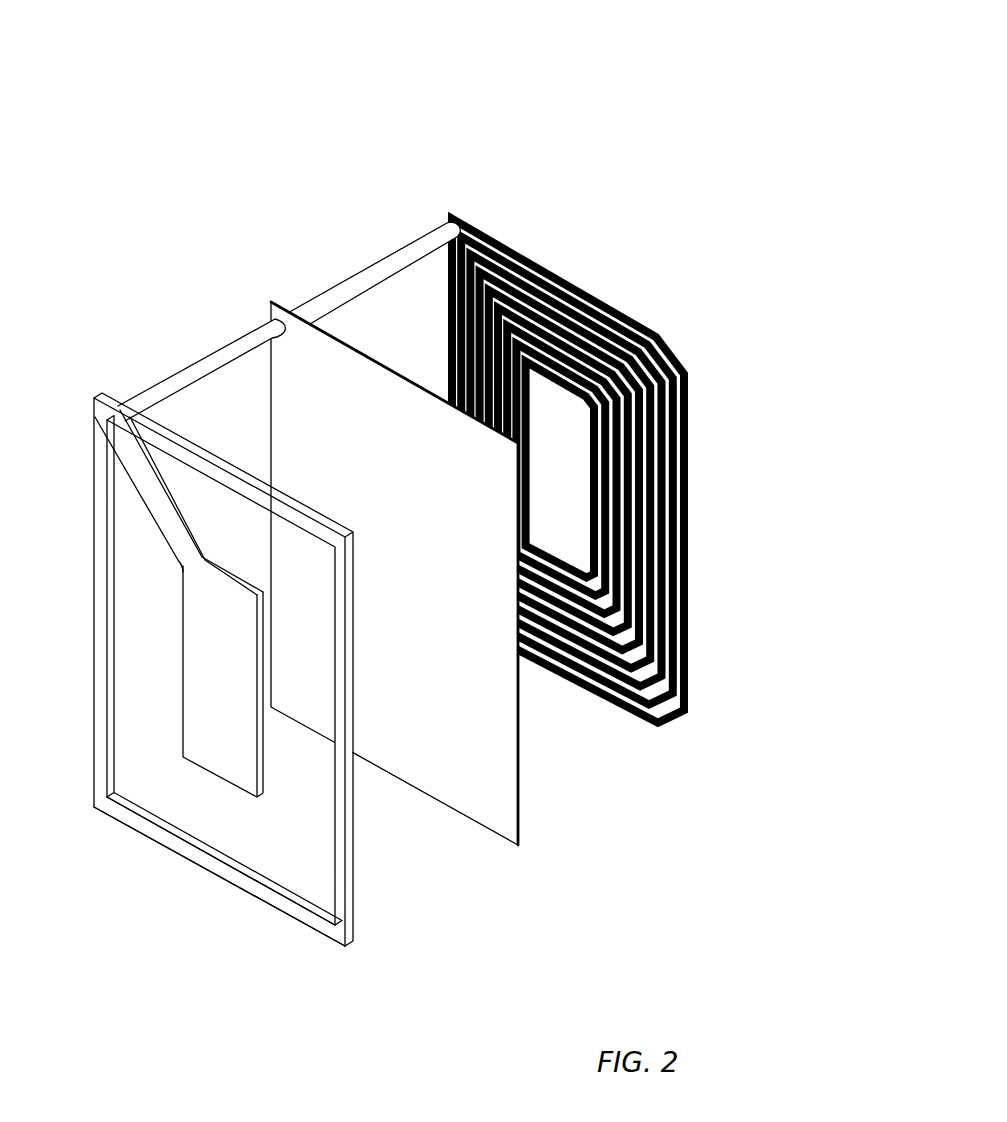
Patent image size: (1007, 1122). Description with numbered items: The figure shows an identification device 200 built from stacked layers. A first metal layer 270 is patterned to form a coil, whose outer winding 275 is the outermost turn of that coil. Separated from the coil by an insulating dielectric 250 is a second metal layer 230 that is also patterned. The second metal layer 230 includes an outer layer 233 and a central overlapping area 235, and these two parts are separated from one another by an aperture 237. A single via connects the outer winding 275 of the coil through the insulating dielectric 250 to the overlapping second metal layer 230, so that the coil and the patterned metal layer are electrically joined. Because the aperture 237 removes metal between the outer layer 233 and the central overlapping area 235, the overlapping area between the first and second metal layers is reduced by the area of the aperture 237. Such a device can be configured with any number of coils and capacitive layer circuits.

The identification device 200 is at (240, 152).
The second metal layer 230 is at (238, 758).
The outer layer 233 is at (173, 858).
The central overlapping area 235 is at (183, 668).
The aperture 237 is at (309, 885).
The insulating dielectric 250 is at (423, 648).
The first metal layer 270 is at (550, 520).
The outer winding of the coil 275 is at (689, 405).